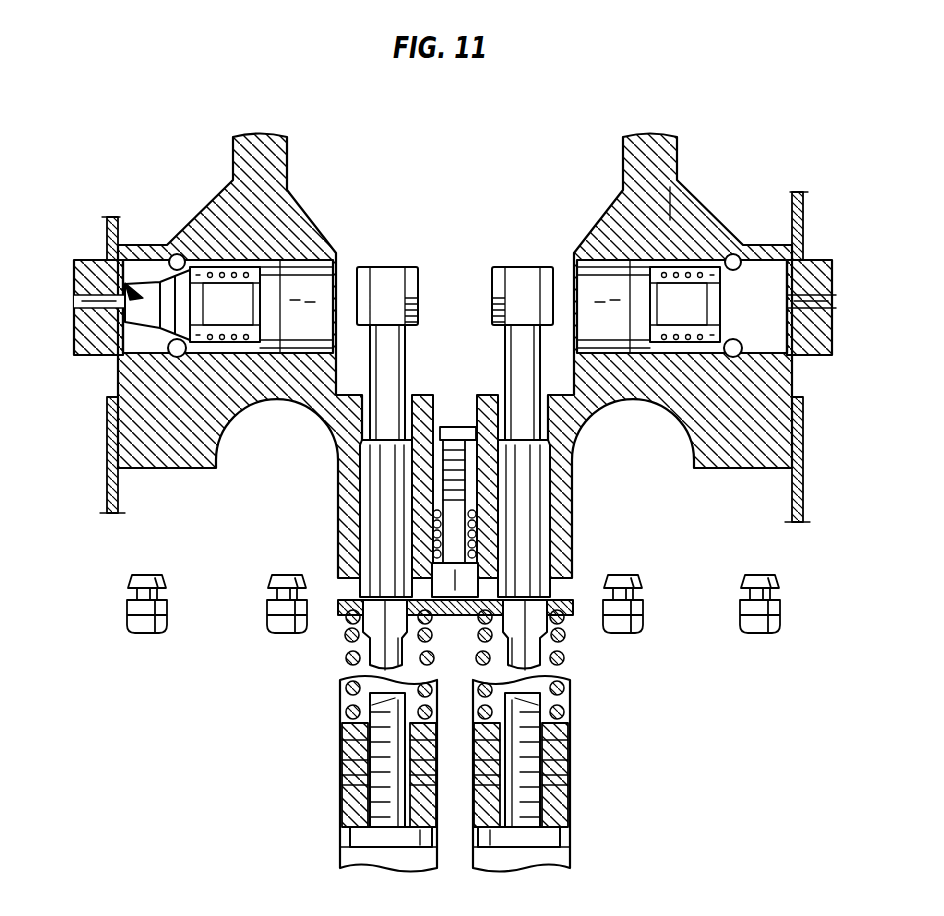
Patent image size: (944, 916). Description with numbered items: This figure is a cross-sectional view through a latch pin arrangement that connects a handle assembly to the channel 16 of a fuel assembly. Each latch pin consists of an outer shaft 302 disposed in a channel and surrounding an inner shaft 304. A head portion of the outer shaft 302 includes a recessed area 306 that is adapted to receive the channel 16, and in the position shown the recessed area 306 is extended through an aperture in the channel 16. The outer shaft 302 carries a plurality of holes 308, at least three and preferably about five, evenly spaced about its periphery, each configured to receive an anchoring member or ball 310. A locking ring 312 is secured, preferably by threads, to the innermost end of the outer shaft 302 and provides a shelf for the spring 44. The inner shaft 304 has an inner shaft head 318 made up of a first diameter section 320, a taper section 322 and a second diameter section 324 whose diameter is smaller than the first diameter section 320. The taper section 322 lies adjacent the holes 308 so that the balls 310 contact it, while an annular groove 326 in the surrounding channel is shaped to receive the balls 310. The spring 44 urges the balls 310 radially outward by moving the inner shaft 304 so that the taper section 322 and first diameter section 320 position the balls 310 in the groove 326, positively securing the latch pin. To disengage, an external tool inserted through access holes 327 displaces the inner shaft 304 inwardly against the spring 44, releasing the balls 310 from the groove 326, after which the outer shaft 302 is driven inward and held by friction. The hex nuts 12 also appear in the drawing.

The hex nut 12 is at (781, 606).
The channel 16 is at (107, 494).
The spring 44 is at (685, 272).
The outer shaft 302 is at (668, 357).
The inner shaft 304 is at (667, 302).
The recessed area 306 is at (812, 258).
The holes 308 is at (740, 258).
The anchoring member or ball 310 is at (730, 358).
The locking ring 312 is at (628, 350).
The inner shaft head 318 is at (126, 292).
The first diameter section 320 is at (195, 244).
The taper section 322 is at (170, 360).
The second diameter section 324 is at (122, 352).
The annular groove 326 is at (174, 255).
The access holes 327 is at (112, 306).